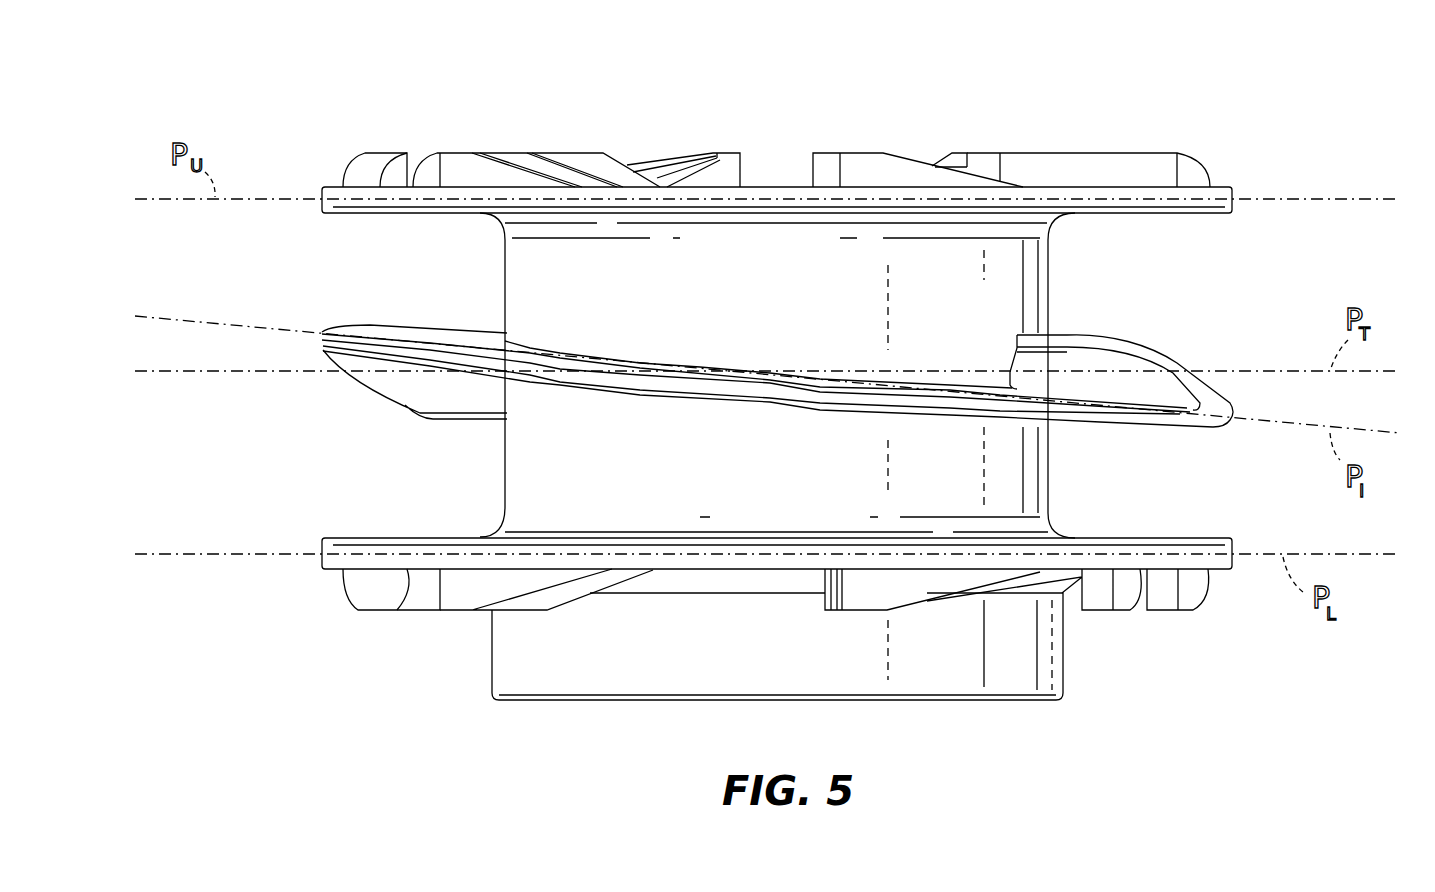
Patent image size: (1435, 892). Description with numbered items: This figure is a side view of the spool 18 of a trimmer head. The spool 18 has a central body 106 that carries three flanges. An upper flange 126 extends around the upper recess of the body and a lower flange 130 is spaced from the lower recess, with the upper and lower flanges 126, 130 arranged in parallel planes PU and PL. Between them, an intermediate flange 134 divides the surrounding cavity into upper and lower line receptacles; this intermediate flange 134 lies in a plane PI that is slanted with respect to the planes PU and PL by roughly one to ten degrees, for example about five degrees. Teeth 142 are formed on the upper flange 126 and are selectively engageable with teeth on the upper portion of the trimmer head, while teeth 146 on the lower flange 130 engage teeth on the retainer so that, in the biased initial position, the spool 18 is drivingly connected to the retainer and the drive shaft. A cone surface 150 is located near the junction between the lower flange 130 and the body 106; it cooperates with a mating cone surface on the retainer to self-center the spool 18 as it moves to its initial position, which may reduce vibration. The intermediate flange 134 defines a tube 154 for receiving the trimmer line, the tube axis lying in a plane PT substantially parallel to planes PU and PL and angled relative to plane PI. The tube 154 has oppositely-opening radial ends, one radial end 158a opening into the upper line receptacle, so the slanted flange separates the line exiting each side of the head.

The spool 18 is at (1146, 680).
The central body 106 is at (1008, 678).
The upper flange 126 is at (1090, 187).
The lower flange 130 is at (393, 608).
The intermediate flange 134 is at (630, 382).
The teeth 142 is at (565, 165).
The teeth 146 is at (545, 597).
The cone surface 150 is at (927, 600).
The tube 154 is at (1127, 358).
The radial end 158a is at (1066, 348).